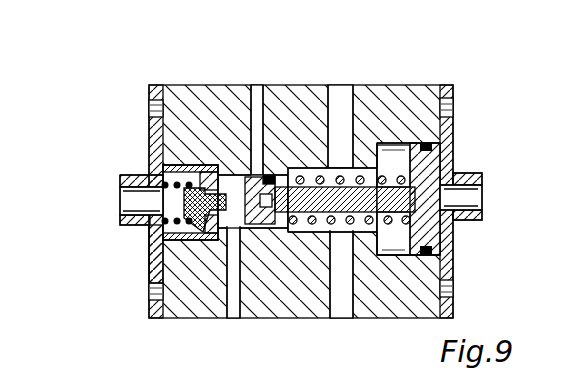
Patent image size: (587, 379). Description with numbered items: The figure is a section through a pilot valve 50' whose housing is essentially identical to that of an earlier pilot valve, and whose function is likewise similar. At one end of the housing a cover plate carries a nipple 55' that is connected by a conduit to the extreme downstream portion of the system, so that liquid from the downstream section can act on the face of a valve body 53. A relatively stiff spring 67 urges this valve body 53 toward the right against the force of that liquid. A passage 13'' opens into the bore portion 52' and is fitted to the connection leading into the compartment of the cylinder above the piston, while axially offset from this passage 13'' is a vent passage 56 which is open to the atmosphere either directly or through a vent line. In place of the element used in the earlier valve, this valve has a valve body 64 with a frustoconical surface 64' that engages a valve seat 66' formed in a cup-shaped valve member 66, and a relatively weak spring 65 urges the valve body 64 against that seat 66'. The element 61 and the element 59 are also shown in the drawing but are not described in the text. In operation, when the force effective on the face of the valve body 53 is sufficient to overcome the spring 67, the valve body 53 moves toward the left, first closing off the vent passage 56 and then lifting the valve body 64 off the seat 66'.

The pilot valve 50' is at (318, 163).
The bore portion 52' is at (243, 132).
The vent passage 56 is at (257, 120).
The seal ring 61 is at (268, 176).
The valve body 53 is at (330, 187).
The spring 67 is at (362, 177).
The nipple 55' is at (486, 182).
The inlet port 59 is at (118, 180).
The frustoconical surface 64' is at (116, 161).
The valve body 64 is at (128, 180).
The spring 65 is at (157, 231).
The valve seat 66' is at (155, 243).
The cup-shaped valve member 66 is at (150, 251).
The passage 13'' is at (196, 291).